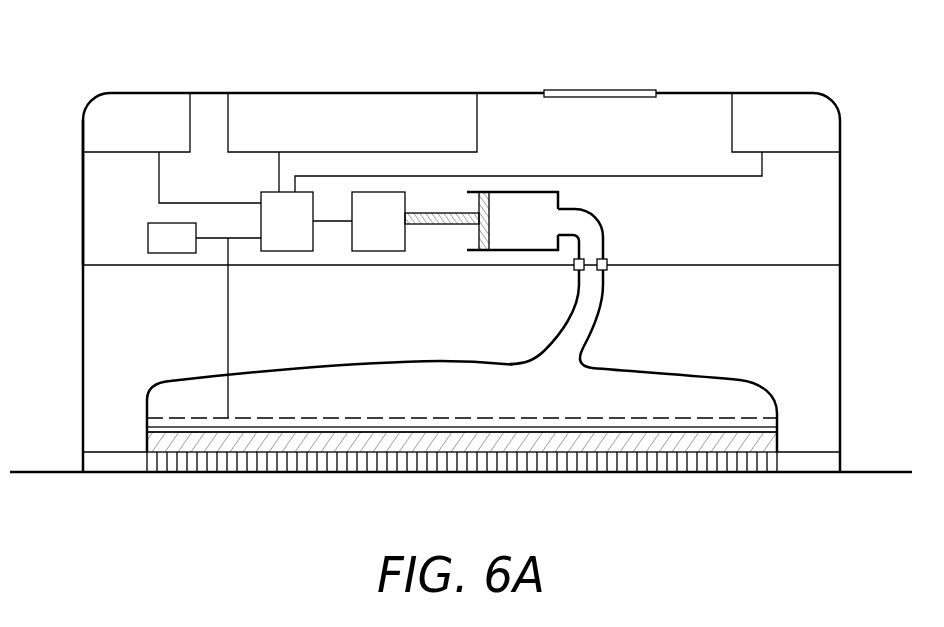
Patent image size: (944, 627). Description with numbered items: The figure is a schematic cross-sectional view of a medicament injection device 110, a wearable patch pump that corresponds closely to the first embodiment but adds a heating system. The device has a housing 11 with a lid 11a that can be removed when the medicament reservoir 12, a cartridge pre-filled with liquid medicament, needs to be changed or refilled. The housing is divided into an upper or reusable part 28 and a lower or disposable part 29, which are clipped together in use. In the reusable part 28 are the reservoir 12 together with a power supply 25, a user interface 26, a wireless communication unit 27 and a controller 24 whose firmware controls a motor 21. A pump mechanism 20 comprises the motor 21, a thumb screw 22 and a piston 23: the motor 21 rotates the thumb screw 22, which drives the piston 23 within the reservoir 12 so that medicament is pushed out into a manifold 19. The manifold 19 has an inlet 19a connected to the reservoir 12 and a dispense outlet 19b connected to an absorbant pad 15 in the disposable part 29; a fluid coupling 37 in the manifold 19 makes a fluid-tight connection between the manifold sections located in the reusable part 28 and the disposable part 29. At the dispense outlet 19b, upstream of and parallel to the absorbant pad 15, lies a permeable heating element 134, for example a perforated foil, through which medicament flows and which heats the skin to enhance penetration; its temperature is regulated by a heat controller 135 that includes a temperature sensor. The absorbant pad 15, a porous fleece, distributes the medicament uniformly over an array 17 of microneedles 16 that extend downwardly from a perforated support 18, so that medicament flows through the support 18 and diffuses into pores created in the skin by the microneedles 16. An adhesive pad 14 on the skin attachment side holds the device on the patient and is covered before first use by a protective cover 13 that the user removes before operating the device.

The medicament injection device 110 is at (84, 60).
The housing 11 is at (83, 292).
The lid 11a is at (598, 90).
The medicament reservoir 12 is at (525, 192).
The protective cover 13 is at (882, 475).
The adhesive pad 14 is at (113, 463).
The absorbant pad 15 is at (763, 438).
The microneedles 16 is at (384, 473).
The array 17 is at (311, 478).
The support 18 is at (684, 456).
The manifold 19 is at (588, 308).
The inlet 19a is at (563, 218).
The dispense outlet 19b is at (762, 408).
The pump mechanism 20 is at (452, 244).
The motor 21 is at (365, 245).
The thumb screw 22 is at (427, 222).
The piston 23 is at (483, 242).
The controller 24 is at (287, 245).
The power supply 25 is at (150, 105).
The user interface 26 is at (350, 105).
The wireless communication unit 27 is at (766, 107).
The reusable part 28 is at (83, 180).
The disposable part 29 is at (83, 385).
The fluid coupling 37 is at (609, 264).
The heating element 134 is at (187, 418).
The heat controller 135 is at (173, 248).